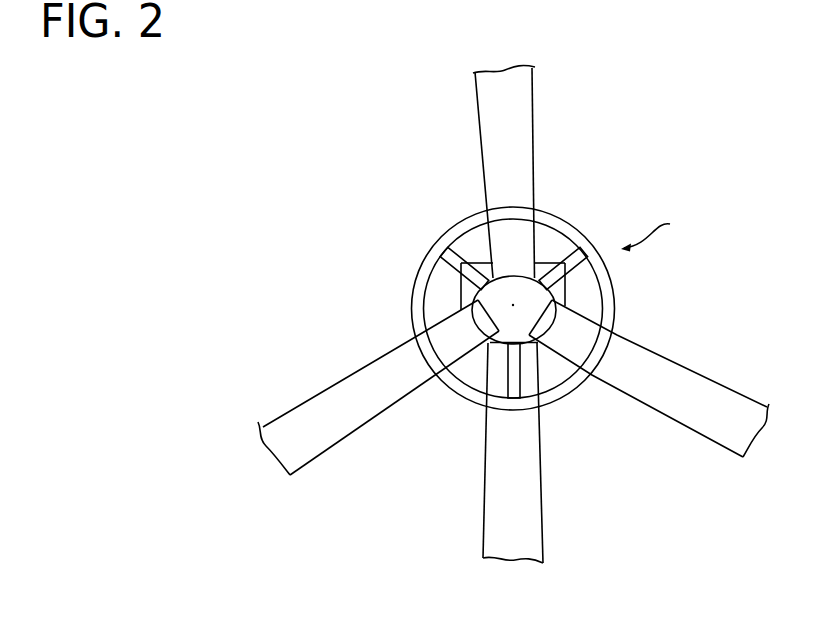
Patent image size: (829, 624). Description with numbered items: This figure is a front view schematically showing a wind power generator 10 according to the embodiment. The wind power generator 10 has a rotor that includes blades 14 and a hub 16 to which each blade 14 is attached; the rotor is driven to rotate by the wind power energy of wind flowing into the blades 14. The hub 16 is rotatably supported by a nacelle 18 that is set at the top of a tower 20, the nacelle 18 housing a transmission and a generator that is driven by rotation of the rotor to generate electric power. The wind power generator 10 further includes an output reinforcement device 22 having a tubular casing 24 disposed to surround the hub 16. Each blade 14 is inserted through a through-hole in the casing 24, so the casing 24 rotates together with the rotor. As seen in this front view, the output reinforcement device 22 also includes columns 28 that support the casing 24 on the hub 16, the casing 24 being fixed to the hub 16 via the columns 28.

The wind power generator 10 is at (348, 113).
The blade 14 is at (527, 137).
The hub 16 is at (507, 327).
The nacelle 18 is at (477, 257).
The tower 20 is at (537, 506).
The output reinforcement device 22 is at (618, 310).
The tubular casing 24 is at (663, 240).
The columns 28 is at (556, 228).